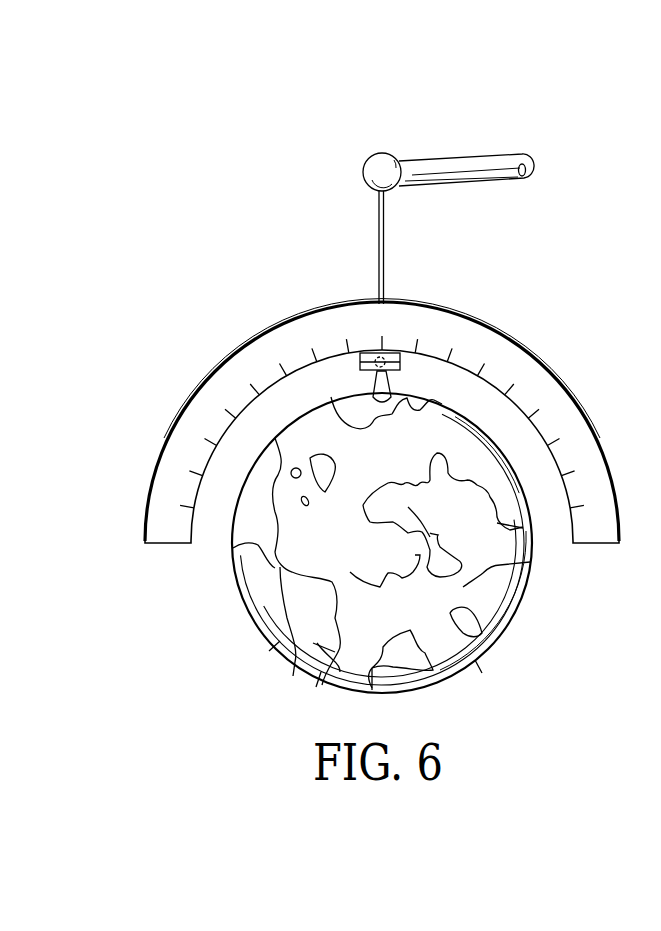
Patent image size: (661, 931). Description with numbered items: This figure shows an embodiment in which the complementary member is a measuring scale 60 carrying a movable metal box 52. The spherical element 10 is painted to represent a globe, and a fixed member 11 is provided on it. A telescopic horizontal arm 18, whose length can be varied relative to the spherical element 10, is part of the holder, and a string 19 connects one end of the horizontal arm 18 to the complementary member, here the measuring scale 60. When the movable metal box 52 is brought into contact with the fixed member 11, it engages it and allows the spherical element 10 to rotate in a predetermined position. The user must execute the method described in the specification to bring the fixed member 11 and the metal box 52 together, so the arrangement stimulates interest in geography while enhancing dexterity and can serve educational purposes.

The spherical element 10 is at (487, 610).
The fixed member 11 is at (280, 342).
The telescopic horizontal arm 18 is at (467, 165).
The string 19 is at (378, 221).
The movable metal box 52 is at (362, 366).
The measuring scale 60 is at (514, 357).